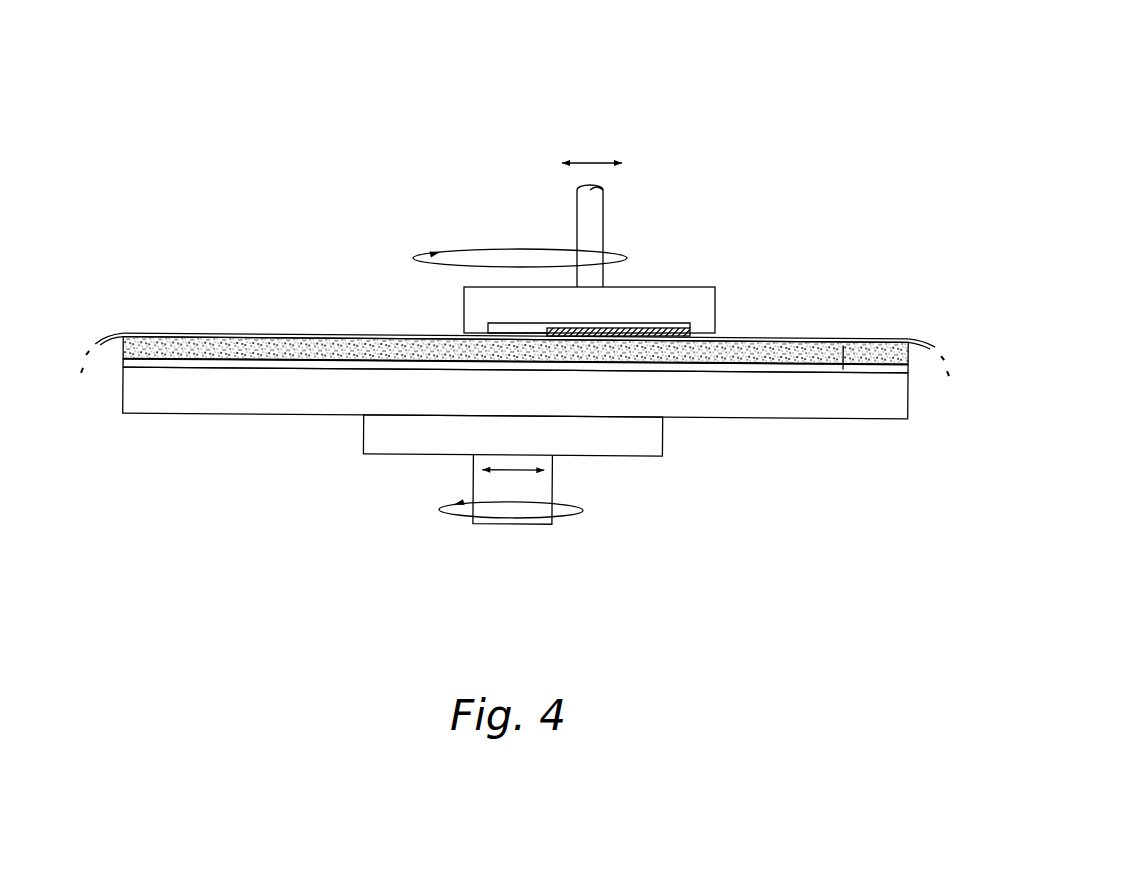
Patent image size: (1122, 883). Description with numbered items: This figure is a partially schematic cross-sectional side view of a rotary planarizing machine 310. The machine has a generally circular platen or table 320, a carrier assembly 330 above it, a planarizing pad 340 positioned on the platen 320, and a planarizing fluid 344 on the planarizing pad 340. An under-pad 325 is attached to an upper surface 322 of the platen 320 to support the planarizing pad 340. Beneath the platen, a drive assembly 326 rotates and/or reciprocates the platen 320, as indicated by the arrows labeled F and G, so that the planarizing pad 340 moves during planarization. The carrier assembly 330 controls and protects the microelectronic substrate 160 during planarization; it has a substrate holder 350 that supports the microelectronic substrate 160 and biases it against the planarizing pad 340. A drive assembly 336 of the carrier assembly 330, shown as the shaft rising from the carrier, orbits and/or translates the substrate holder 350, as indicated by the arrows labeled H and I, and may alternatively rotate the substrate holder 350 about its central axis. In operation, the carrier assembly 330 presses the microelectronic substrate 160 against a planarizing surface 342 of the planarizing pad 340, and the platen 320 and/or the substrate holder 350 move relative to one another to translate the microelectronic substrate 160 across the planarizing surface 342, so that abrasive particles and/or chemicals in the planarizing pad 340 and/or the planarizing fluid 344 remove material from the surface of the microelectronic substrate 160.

The rotary planarizing machine 310 is at (694, 56).
The platen 320 is at (545, 403).
The upper surface 322 is at (843, 350).
The under-pad 325 is at (770, 367).
The drive assembly 326 is at (612, 468).
The carrier assembly 330 is at (728, 285).
The drive assembly 336 is at (558, 208).
The planarizing pad 340 is at (223, 348).
The planarizing surface 342 is at (260, 335).
The planarizing fluid 344 is at (295, 338).
The substrate holder 350 is at (612, 315).
The microelectronic substrate 160 is at (650, 329).